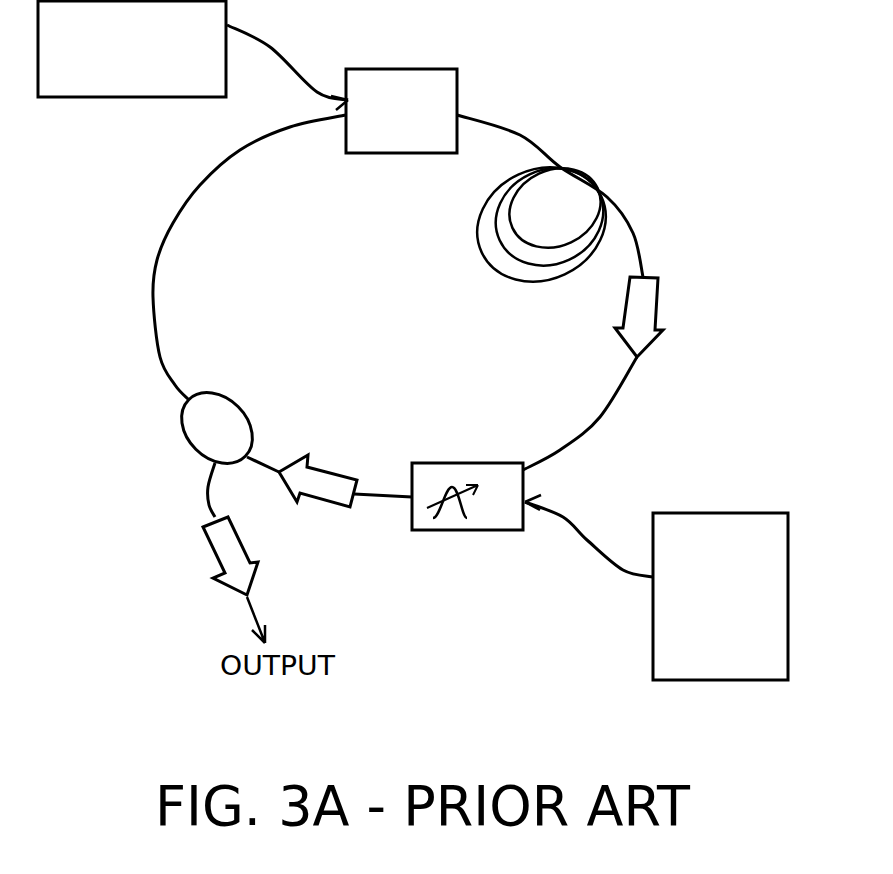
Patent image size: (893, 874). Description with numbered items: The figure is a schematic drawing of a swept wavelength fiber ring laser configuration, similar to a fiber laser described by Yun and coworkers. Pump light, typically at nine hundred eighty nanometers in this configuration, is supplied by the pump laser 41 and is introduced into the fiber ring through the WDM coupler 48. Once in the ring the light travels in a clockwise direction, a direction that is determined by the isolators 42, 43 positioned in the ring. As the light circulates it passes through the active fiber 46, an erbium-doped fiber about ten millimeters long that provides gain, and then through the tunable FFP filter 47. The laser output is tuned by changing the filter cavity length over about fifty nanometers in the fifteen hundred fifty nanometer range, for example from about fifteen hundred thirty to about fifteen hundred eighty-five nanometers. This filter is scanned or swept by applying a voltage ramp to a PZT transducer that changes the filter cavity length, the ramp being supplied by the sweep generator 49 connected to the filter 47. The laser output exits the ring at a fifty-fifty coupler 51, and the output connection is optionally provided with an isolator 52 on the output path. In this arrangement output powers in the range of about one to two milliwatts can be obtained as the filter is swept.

The pump laser 41 is at (187, 72).
The WDM coupler 48 is at (443, 98).
The active fiber 46 is at (598, 215).
The isolator 42 is at (645, 300).
The tunable FFP filter 47 is at (492, 515).
The sweep generator 49 is at (667, 588).
The isolator 43 is at (322, 485).
The 50:50 coupler 51 is at (207, 425).
The isolator 52 is at (227, 553).